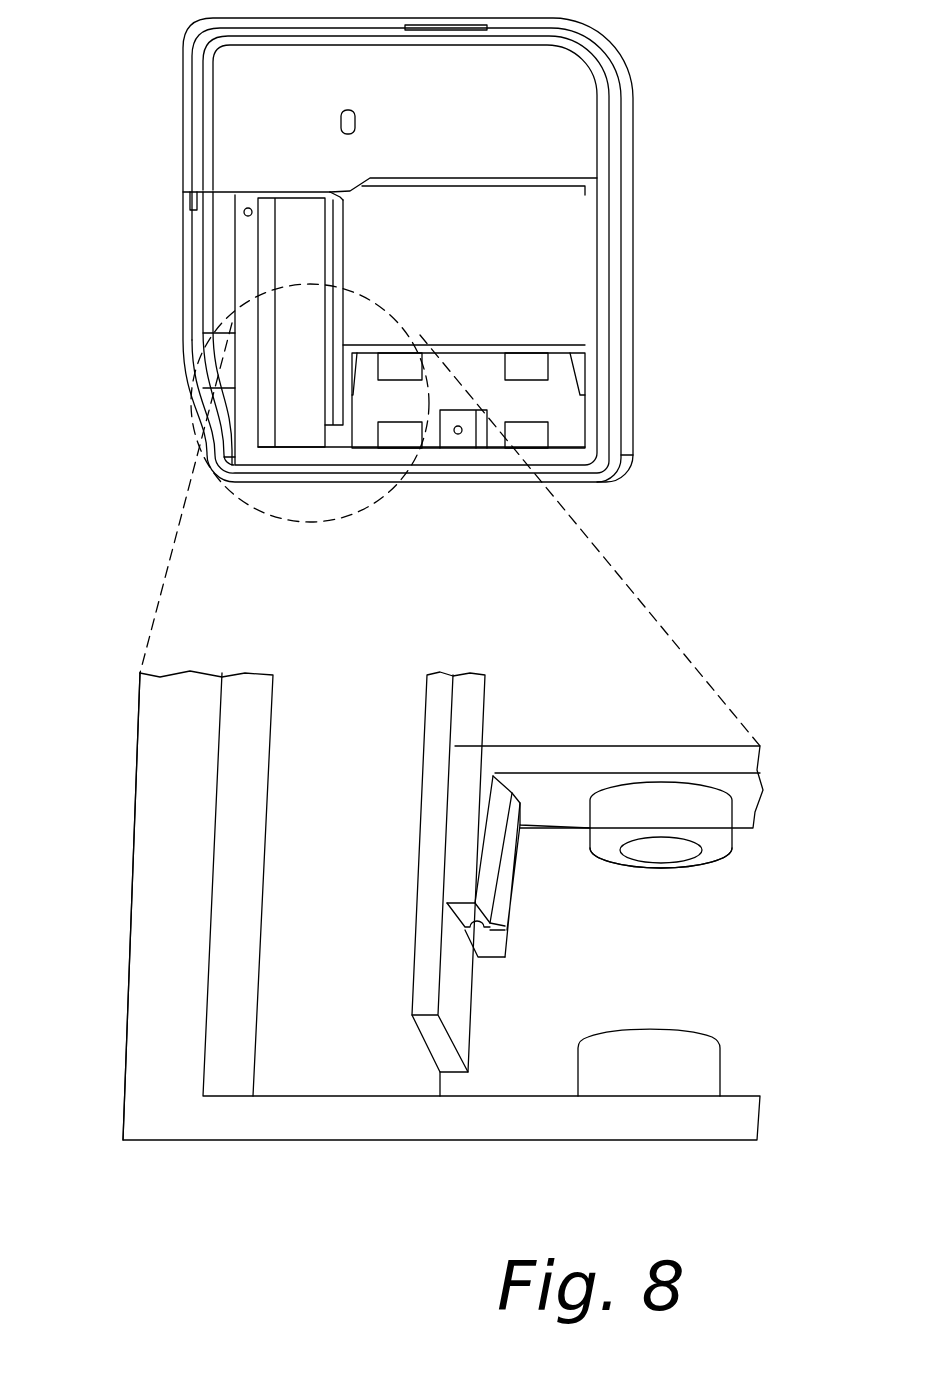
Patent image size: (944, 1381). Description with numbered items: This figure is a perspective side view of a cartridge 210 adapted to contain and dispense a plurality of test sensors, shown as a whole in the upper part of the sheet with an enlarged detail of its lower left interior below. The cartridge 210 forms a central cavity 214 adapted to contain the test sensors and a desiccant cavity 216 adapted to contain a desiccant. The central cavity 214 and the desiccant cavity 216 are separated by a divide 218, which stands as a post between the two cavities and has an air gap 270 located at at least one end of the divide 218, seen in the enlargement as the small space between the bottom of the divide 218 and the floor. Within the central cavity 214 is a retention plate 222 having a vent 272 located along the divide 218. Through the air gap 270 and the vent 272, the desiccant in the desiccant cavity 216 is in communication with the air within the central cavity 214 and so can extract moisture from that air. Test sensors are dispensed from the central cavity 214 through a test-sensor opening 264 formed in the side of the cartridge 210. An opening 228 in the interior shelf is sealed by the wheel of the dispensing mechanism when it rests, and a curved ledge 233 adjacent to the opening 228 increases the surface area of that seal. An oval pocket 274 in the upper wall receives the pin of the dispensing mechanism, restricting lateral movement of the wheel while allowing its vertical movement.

The cartridge 210 is at (697, 46).
The test-sensor opening 264 is at (176, 190).
The opening 228 is at (336, 178).
The curved ledge 233 is at (362, 194).
The oval pocket 274 is at (366, 121).
The retention plate 222 is at (487, 345).
The central cavity 214 is at (521, 704).
The divide 218 is at (437, 743).
The desiccant cavity 216 is at (338, 870).
The vent 272 is at (469, 950).
The air gap 270 is at (452, 1084).